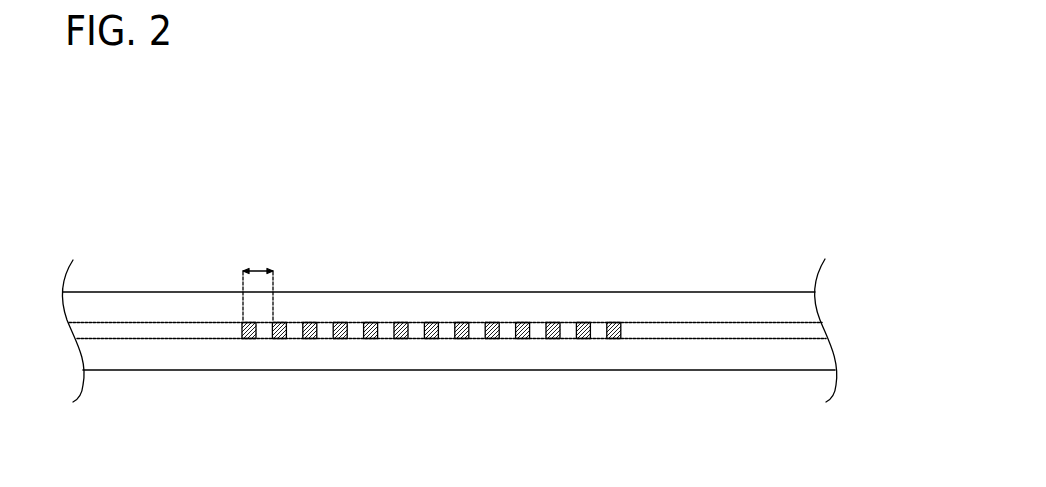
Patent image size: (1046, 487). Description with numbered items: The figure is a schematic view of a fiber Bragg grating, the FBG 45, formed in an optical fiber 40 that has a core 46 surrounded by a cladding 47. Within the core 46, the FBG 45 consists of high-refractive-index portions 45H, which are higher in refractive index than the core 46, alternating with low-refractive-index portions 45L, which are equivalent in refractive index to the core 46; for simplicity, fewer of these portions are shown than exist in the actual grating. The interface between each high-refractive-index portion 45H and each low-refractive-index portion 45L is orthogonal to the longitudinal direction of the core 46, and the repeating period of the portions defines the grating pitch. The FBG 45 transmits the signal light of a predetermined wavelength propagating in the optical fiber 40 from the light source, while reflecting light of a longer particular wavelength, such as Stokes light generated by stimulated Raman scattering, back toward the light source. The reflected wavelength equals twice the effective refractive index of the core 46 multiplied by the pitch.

The optical fiber 40 is at (779, 155).
The fiber Bragg grating (FBG) 45 is at (447, 338).
The high-refractive-index portion 45H is at (431, 281).
The low-refractive-index portion 45L is at (455, 330).
The core 46 is at (665, 330).
The cladding 47 is at (163, 307).